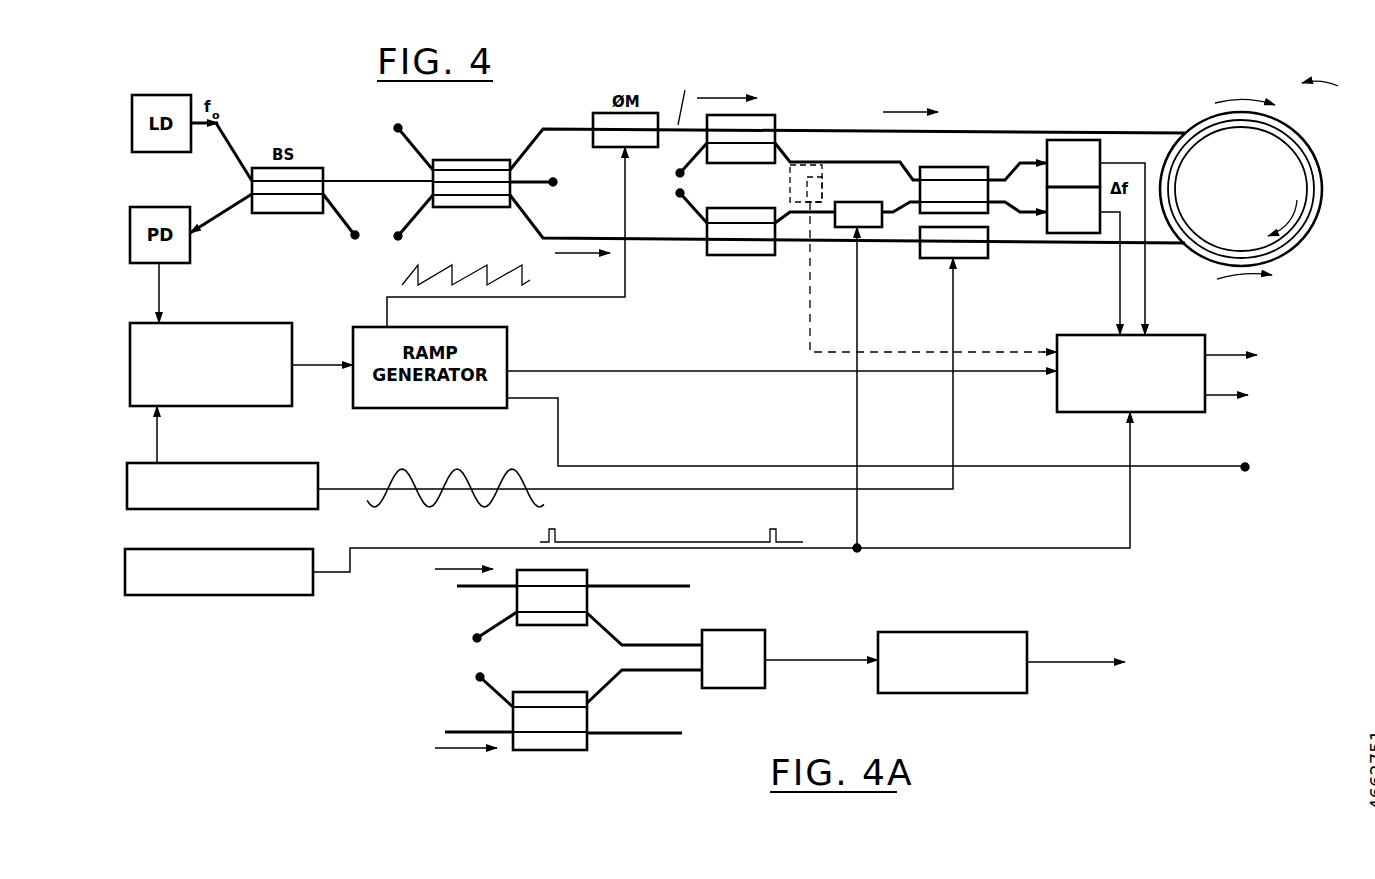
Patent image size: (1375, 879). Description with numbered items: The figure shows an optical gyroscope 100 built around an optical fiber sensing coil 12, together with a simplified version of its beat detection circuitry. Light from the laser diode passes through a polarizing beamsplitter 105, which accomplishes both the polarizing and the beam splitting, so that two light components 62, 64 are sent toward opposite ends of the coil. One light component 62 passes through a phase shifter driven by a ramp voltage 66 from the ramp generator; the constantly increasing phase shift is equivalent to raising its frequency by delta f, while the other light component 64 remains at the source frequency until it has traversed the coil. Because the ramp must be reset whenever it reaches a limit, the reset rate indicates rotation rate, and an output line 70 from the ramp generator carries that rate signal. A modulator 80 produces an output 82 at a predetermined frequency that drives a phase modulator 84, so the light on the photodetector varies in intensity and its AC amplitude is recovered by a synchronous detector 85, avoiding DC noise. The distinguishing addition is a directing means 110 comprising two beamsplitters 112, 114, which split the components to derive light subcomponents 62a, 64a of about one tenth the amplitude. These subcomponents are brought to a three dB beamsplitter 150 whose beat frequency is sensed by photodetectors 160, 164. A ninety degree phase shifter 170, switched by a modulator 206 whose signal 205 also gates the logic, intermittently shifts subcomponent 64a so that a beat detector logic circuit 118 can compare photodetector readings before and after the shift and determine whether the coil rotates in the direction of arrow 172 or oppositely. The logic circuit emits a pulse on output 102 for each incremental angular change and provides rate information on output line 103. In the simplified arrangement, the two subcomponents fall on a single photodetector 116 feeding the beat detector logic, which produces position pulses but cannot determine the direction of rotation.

In FIG. 4, the optical fiber sensing coil 12 is at (1323, 182).
In FIG. 4, the light component 62 is at (737, 95).
In FIG. 4A, the light component 62 is at (450, 570).
In FIG. 4, the light subcomponent 62a is at (791, 153).
In FIG. 4A, the light subcomponent 62a is at (606, 606).
In FIG. 4, the light component 64 is at (573, 257).
In FIG. 4A, the light component 64 is at (457, 747).
In FIG. 4, the light subcomponent 64a is at (800, 217).
In FIG. 4A, the light subcomponent 64a is at (630, 686).
In FIG. 4, the ramp voltage 66 is at (450, 265).
In FIG. 4, the output line 70 is at (1193, 473).
In FIG. 4, the modulator 80 is at (252, 466).
In FIG. 4, the modulator output 82 is at (445, 480).
In FIG. 4, the phase modulator 84 is at (928, 258).
In FIG. 4, the synchronous detector 85 is at (240, 322).
In FIG. 4, the optical gyroscope 100 is at (1280, 97).
In FIG. 4, the output 102 is at (1226, 356).
In FIG. 4A, the output 102 is at (1072, 660).
In FIG. 4, the output line 103 is at (1225, 397).
In FIG. 4, the polarizing beamsplitter 105 is at (497, 160).
In FIG. 4, the directing means 110 is at (712, 198).
In FIG. 4, the beamsplitter 112 is at (762, 163).
In FIG. 4A, the beamsplitter 112 is at (573, 628).
In FIG. 4, the beamsplitter 114 is at (740, 257).
In FIG. 4A, the beamsplitter 114 is at (563, 691).
In FIG. 4, the photodetector 116 is at (807, 168).
In FIG. 4A, the photodetector 116 is at (730, 640).
In FIG. 4, the beat detector logic circuit 118 is at (1068, 335).
In FIG. 4A, the beat detector logic circuit 118 is at (950, 635).
In FIG. 4, the 3 dB beamsplitter 150 is at (982, 150).
In FIG. 4, the photodetector 160 is at (1044, 209).
In FIG. 4, the photodetector 164 is at (1080, 235).
In FIG. 4, the 90° phase shifter 170 is at (873, 227).
In FIG. 4, the arrow 172 is at (1287, 223).
In FIG. 4, the signal 205 is at (853, 401).
In FIG. 4, the modulator 206 is at (627, 520).